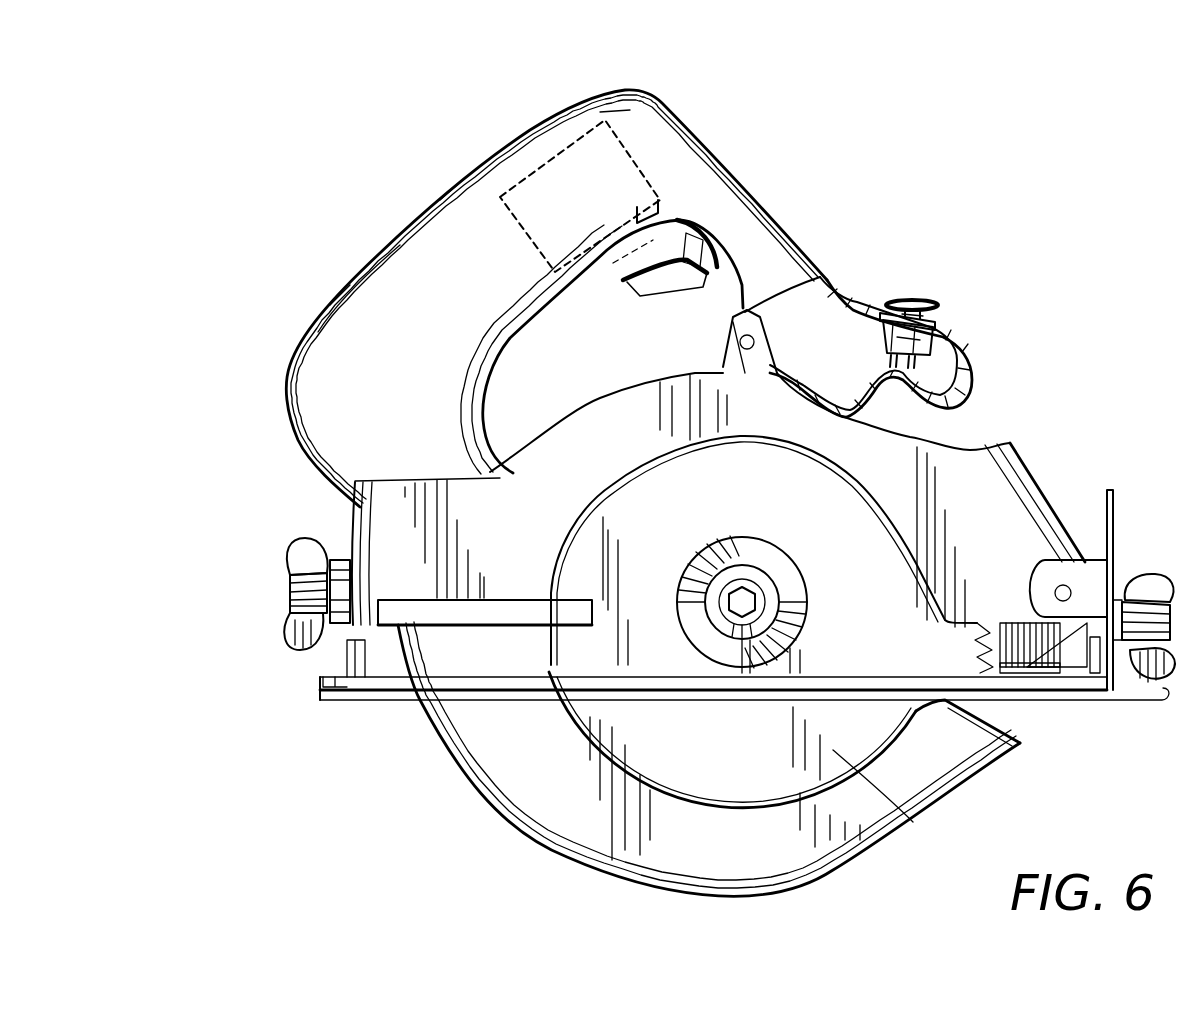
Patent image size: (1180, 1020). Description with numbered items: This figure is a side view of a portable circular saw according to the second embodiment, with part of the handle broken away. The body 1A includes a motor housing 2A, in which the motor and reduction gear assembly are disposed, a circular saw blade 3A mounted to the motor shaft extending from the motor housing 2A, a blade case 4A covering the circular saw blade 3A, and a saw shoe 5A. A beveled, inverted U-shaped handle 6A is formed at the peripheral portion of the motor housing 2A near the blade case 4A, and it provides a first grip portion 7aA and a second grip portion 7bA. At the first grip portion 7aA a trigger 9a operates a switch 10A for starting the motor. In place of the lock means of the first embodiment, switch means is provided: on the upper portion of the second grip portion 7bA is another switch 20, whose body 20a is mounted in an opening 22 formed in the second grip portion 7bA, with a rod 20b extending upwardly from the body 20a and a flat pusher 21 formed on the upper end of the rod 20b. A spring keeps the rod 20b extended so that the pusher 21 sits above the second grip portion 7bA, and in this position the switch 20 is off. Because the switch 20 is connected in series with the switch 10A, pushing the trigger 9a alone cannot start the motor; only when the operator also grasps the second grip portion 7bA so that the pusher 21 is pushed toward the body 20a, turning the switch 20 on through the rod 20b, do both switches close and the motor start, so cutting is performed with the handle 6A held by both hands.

The body 1A is at (446, 761).
The motor housing 2A is at (660, 383).
The circular saw blade 3A is at (913, 822).
The blade case 4A is at (500, 488).
The saw shoe 5A is at (613, 700).
The handle 6A is at (347, 293).
The first grip portion 7aA is at (449, 196).
The second grip portion 7bA is at (970, 383).
The trigger 9a is at (703, 242).
The switch 10A is at (593, 142).
The switch 20 is at (935, 322).
The body 20a is at (937, 334).
The rod 20b is at (913, 300).
The flat pusher 21 is at (918, 308).
The opening 22 is at (880, 305).